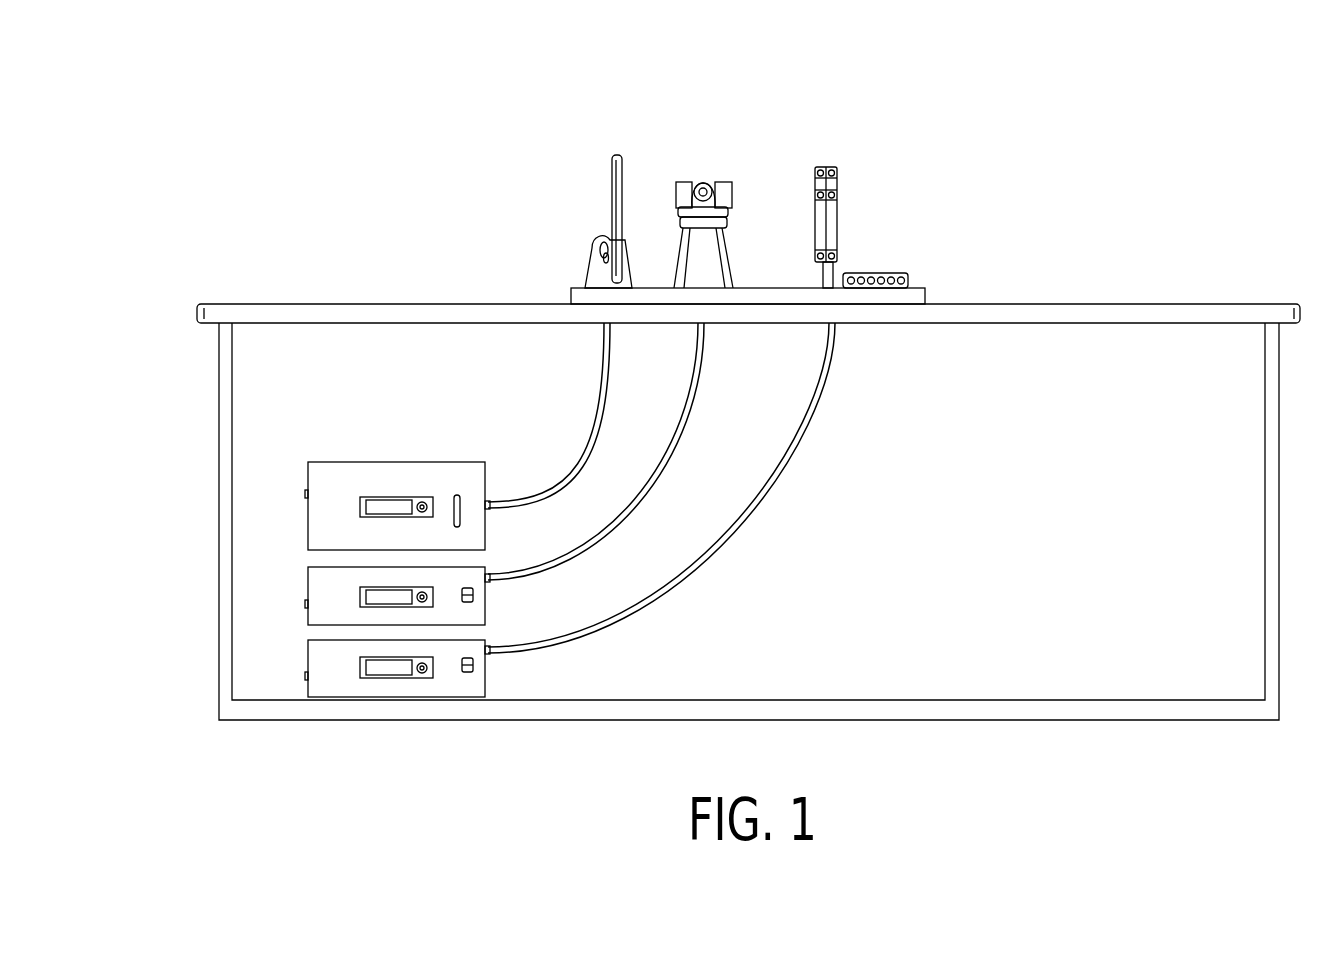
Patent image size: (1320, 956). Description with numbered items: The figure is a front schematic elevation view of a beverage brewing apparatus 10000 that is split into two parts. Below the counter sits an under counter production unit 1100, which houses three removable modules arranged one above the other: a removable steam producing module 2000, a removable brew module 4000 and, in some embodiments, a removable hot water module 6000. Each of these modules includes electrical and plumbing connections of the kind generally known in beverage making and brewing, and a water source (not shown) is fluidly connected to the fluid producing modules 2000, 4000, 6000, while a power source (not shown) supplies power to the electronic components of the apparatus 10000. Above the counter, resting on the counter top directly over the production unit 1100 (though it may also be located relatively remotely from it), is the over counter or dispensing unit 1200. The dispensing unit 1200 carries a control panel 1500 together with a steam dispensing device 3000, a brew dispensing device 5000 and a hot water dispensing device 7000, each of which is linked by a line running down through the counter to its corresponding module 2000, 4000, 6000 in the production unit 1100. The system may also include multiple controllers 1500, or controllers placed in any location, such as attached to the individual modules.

The beverage brewing apparatus 10000 is at (1076, 143).
The under counter production unit 1100 is at (875, 500).
The dispensing unit 1200 is at (541, 244).
The control panel 1500 is at (910, 275).
The removable steam producing module 2000 is at (307, 494).
The steam dispensing device 3000 is at (612, 183).
The removable brew module 4000 is at (307, 594).
The brew dispensing device 5000 is at (713, 181).
The removable hot water module 6000 is at (307, 669).
The hot water dispensing device 7000 is at (837, 197).